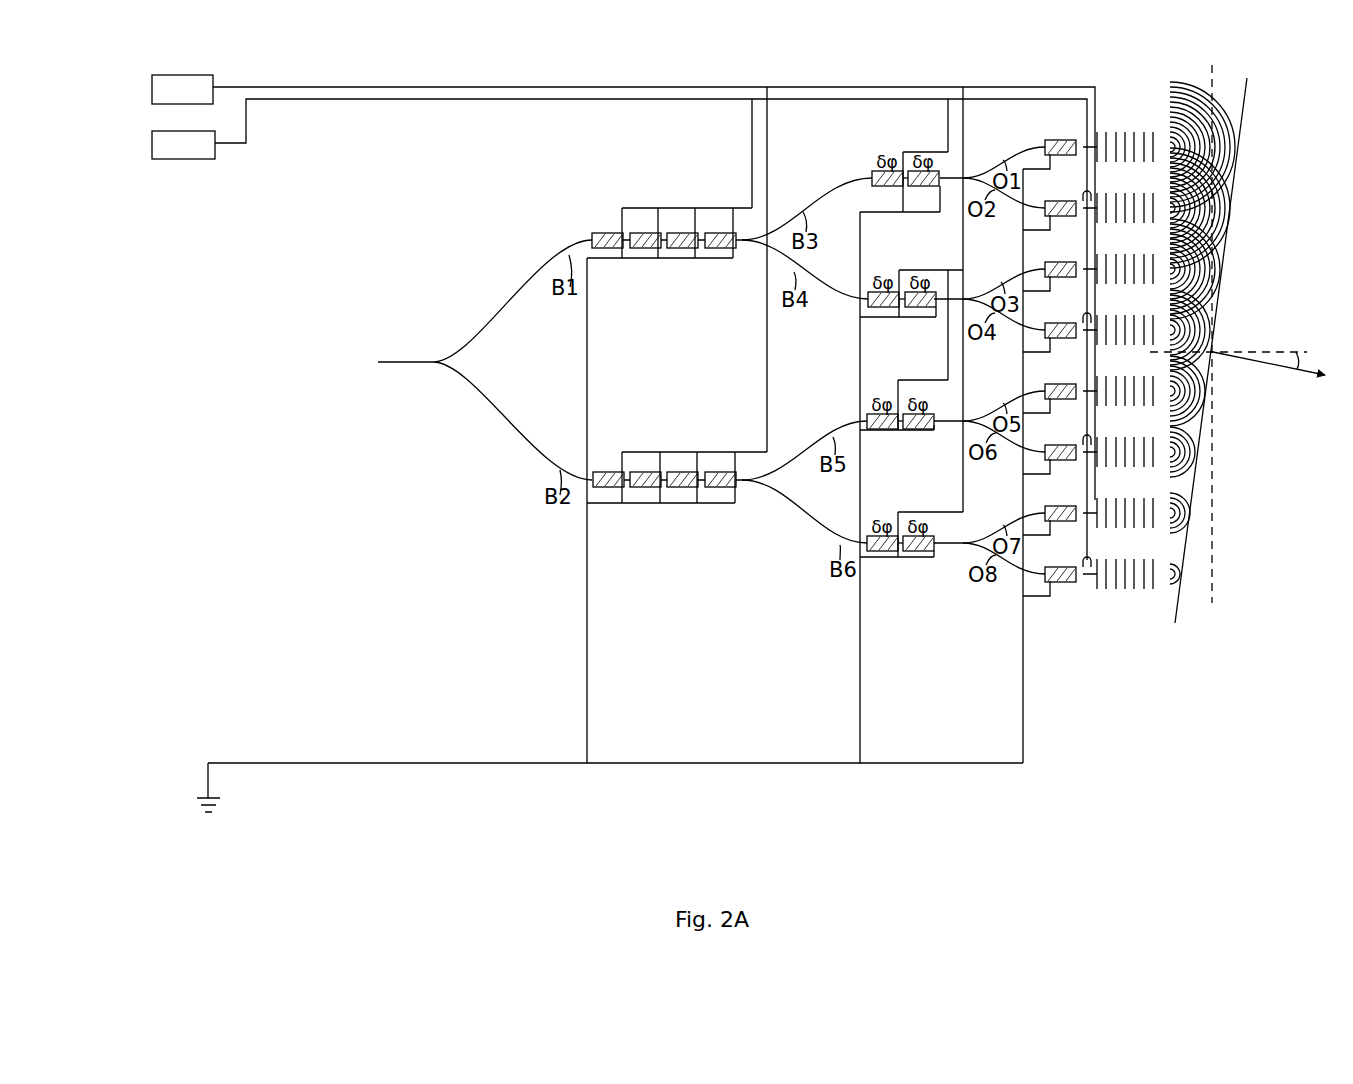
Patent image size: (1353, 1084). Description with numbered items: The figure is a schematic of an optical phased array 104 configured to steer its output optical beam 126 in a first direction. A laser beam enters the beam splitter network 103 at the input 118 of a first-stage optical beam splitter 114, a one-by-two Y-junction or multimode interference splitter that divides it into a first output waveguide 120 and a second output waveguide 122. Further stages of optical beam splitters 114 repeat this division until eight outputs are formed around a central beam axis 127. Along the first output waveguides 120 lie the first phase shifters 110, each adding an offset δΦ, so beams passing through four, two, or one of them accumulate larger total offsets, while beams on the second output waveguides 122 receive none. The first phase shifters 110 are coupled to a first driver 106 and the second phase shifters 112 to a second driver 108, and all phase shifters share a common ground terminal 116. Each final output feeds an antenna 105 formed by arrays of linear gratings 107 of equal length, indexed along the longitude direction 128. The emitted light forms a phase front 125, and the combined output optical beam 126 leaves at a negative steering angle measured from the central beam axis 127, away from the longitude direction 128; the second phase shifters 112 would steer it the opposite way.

The beam splitter network 103 is at (393, 252).
The optical phased array 104 is at (119, 181).
The antenna 105 is at (1088, 377).
The first driver 106 is at (619, 329).
The gratings 107 is at (1135, 590).
The second driver 108 is at (623, 293).
The first phase shifters 110 is at (596, 240).
The second phase shifters 112 is at (592, 472).
The optical beam splitters 114 is at (478, 312).
The ground terminal 116 is at (610, 490).
The input 118 is at (405, 362).
The first output waveguide 120 is at (546, 268).
The second output waveguide 122 is at (503, 420).
The phase front 125 is at (1225, 210).
The output optical beam 126 is at (1252, 362).
The central beam axis 127 is at (1232, 352).
The longitude direction 128 is at (1212, 570).